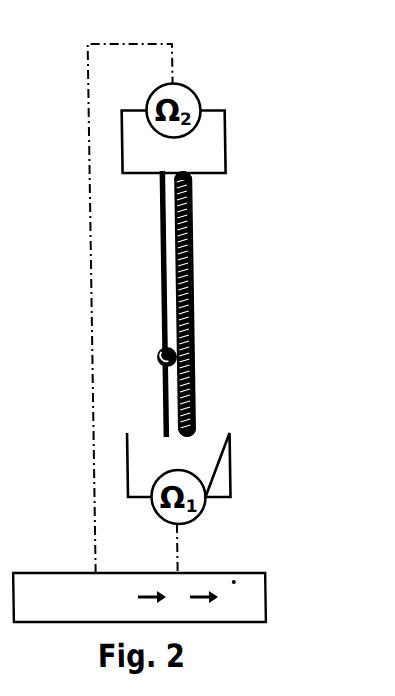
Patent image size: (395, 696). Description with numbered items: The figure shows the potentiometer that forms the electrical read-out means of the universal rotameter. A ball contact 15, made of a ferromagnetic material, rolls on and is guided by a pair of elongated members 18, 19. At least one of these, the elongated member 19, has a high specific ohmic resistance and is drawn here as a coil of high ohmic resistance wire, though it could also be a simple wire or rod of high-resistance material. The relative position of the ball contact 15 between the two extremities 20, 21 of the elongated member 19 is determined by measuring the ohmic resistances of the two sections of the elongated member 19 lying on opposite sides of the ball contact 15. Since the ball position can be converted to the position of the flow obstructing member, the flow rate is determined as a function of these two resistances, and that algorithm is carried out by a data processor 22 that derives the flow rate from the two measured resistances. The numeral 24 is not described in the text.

The ball contact 15 is at (170, 355).
The elongated member 18 is at (156, 320).
The elongated member of high specific ohmic resistance 19 is at (188, 313).
The extremity of the elongated member 20 is at (189, 433).
The extremity of the elongated member 21 is at (189, 175).
The data processor 22 is at (52, 573).
The reference numeral (adjacent figure) 24 is at (30, 695).